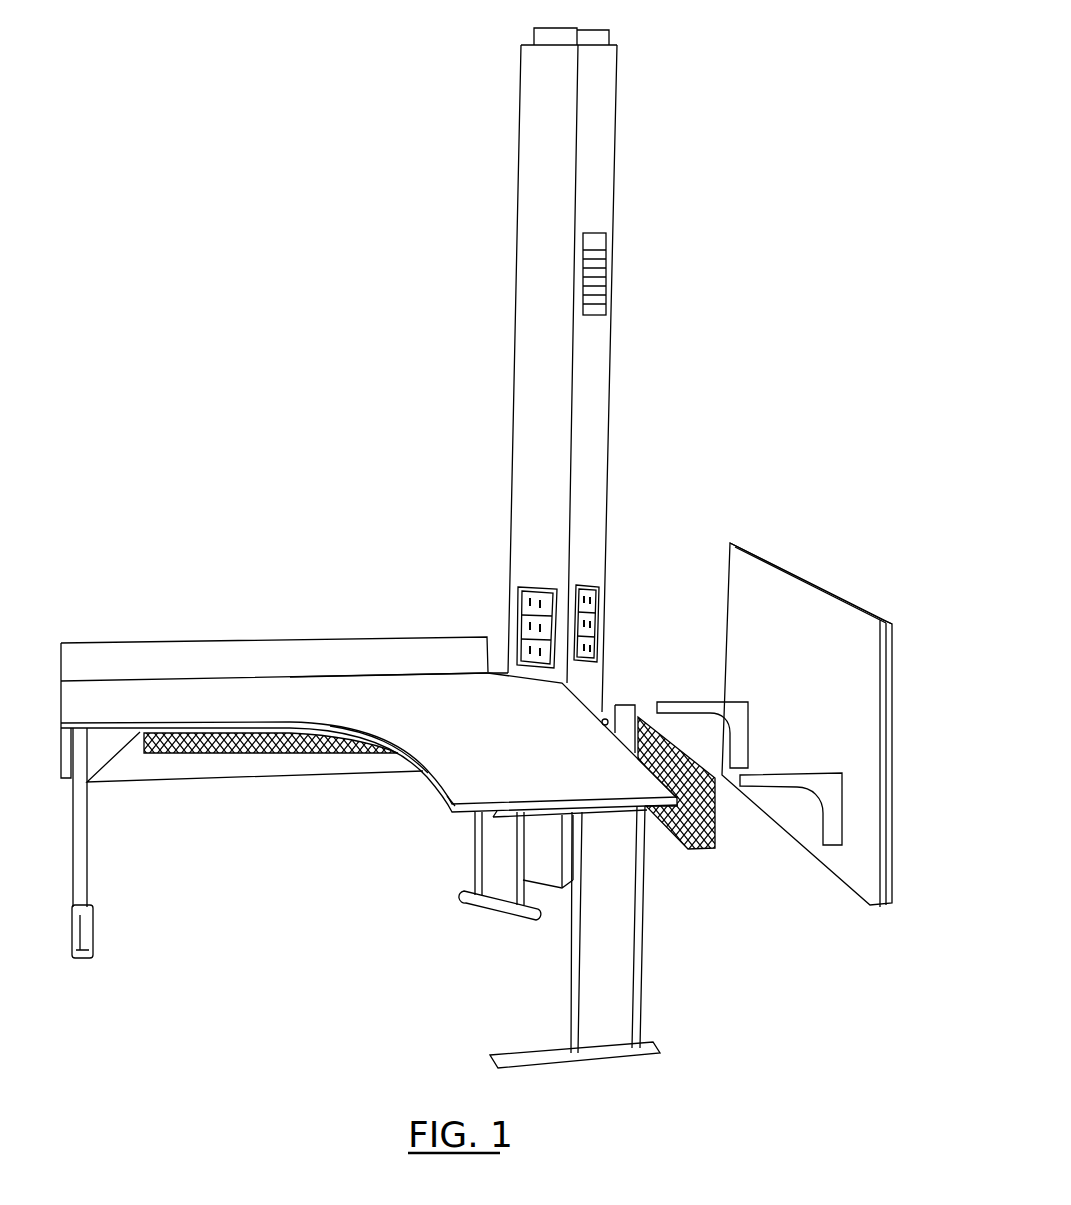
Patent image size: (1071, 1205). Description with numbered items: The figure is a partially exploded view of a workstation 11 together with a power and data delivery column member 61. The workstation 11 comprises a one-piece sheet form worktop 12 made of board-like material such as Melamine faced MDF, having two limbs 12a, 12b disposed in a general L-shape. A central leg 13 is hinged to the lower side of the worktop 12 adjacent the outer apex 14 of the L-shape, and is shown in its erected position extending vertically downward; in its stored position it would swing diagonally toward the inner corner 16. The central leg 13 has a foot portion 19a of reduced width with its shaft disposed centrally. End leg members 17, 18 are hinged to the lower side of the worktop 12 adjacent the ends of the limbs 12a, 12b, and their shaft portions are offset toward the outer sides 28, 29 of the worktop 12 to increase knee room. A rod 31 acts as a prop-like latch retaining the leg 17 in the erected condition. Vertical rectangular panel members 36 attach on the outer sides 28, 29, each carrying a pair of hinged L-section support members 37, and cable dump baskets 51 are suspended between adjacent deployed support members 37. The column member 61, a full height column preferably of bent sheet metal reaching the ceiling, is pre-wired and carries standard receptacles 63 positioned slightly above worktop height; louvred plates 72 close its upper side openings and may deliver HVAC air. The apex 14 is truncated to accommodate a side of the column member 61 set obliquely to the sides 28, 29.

The workstation 11 is at (263, 608).
The worktop 12 is at (405, 710).
The limb 12a is at (125, 695).
The limb 12b is at (462, 792).
The central leg 13 is at (495, 884).
The outer apex 14 is at (567, 698).
The inner corner 16 is at (407, 748).
The end leg member 17 is at (94, 868).
The end leg member 18 is at (668, 982).
The foot portion 19a is at (508, 910).
The outer side 28 is at (603, 724).
The outer side 29 is at (318, 672).
The rod 31 is at (120, 764).
The panel member 36 is at (195, 653).
The support member 37 is at (690, 700).
The cable dump basket 51 is at (290, 763).
The column member 61 is at (628, 382).
The receptacles 63 is at (522, 634).
The louvred plates 72 is at (598, 242).